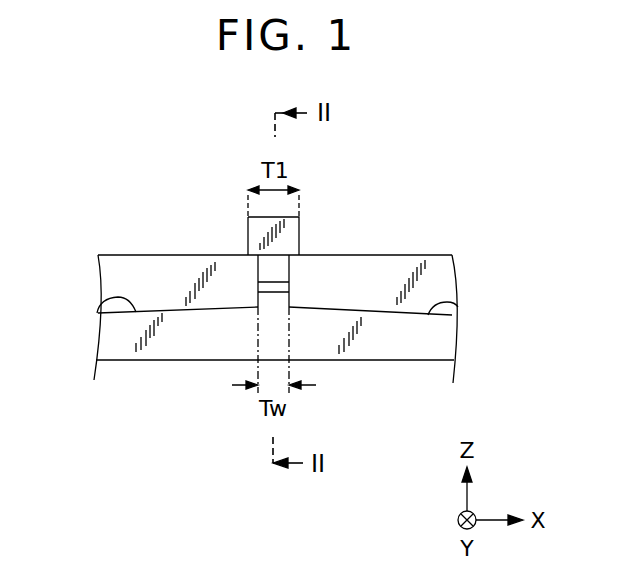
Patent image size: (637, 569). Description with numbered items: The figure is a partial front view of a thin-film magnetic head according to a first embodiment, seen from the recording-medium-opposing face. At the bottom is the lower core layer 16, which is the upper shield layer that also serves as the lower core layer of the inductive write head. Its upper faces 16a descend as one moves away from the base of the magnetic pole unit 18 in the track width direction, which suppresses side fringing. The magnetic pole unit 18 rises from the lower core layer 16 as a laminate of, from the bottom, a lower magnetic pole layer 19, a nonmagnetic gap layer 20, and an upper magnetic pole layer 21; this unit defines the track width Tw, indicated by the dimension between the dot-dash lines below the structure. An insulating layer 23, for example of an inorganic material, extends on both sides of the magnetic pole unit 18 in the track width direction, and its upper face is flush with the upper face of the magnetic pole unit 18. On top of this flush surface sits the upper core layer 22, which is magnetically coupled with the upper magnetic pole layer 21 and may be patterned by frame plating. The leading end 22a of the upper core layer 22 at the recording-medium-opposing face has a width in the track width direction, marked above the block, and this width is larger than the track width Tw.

The lower core layer 16 is at (430, 343).
The upper faces of the lower core layer 16a is at (112, 299).
The magnetic pole unit 18 is at (453, 210).
The lower magnetic pole layer 19 is at (280, 300).
The nonmagnetic gap layer 20 is at (280, 287).
The upper magnetic pole layer 21 is at (280, 270).
The upper core layer 22 is at (248, 218).
The leading end of the upper core layer 22a is at (257, 232).
The insulating layer 23 is at (120, 273).